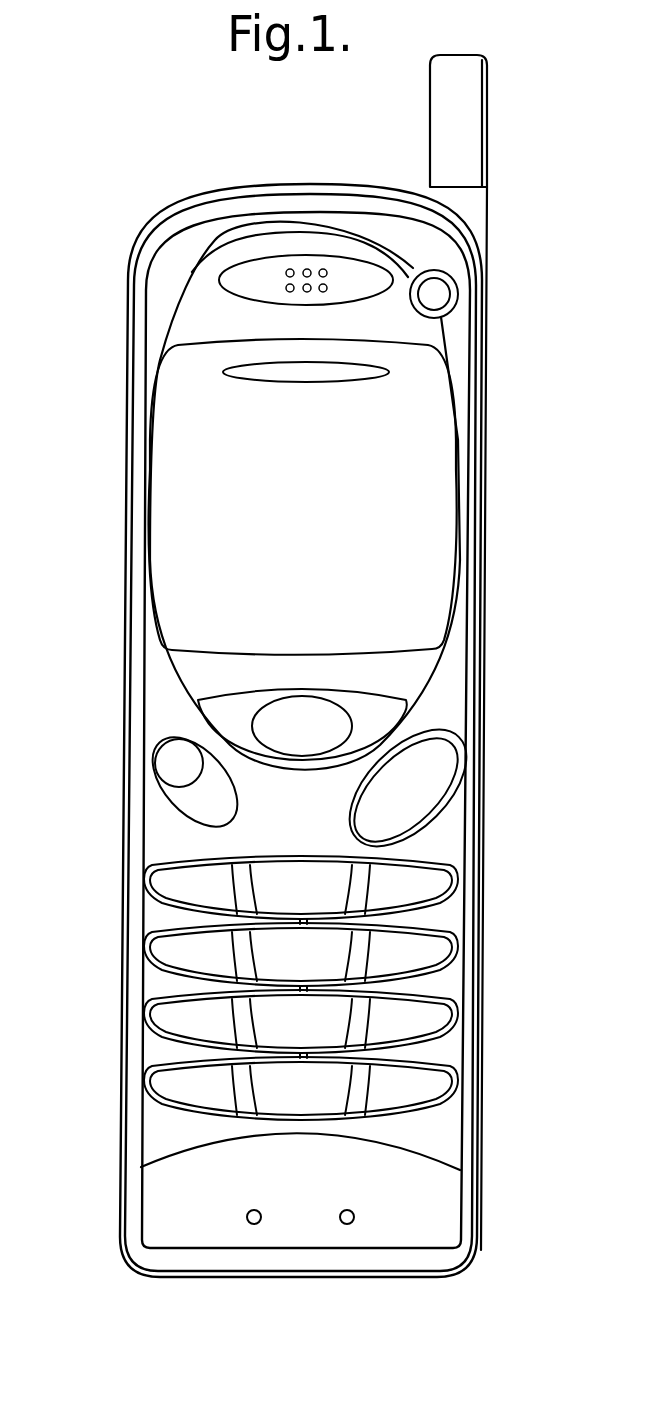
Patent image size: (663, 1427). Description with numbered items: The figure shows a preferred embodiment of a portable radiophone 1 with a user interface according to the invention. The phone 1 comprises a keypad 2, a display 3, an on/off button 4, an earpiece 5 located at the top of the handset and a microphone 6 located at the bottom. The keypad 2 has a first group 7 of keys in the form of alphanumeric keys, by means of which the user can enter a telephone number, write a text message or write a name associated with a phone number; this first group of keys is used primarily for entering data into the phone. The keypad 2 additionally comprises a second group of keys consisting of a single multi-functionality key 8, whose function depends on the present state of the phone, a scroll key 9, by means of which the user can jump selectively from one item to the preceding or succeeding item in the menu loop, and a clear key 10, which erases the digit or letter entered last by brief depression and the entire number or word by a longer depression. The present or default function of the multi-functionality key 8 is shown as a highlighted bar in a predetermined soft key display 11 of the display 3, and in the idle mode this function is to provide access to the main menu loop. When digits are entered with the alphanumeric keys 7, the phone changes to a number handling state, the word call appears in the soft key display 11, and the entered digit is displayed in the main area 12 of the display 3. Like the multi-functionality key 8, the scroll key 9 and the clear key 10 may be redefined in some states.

The radiophone 1 is at (495, 424).
The keypad 2 is at (293, 889).
The display 3 is at (294, 497).
The on/off button 4 is at (436, 297).
The earpiece 5 is at (307, 268).
The microphone 6 is at (308, 1223).
The first group of keys 7 is at (426, 960).
The single multi-functionality key 8 is at (327, 722).
The scroll key 9 is at (418, 790).
The clear key 10 is at (168, 760).
The soft key display 11 is at (193, 610).
The main area 12 is at (192, 460).